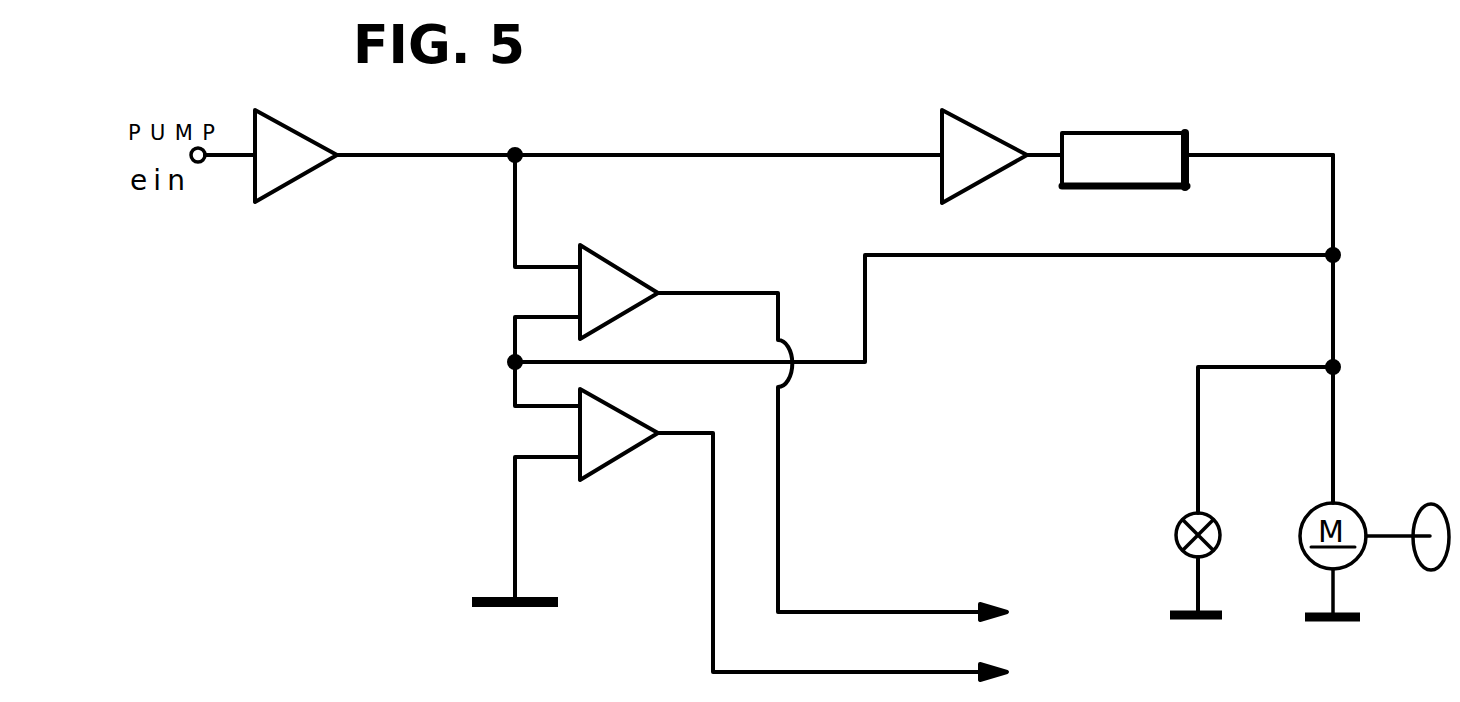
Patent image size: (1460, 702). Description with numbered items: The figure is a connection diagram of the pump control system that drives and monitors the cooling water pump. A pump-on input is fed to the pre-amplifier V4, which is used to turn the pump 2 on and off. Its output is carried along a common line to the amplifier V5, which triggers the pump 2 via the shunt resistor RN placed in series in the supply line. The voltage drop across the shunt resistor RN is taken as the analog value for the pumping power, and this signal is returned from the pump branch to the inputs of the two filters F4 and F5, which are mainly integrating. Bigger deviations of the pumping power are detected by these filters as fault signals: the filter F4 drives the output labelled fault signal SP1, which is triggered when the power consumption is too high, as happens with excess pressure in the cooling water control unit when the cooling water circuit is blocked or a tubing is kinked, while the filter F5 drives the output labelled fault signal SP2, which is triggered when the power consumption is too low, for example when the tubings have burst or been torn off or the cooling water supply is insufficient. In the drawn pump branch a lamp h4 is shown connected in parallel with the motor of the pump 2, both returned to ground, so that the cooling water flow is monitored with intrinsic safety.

The pre-amplifier V4 is at (296, 156).
The amplifier V5 is at (984, 156).
The shunt resistor RN is at (1093, 152).
The filter F4 is at (619, 292).
The filter F5 is at (619, 434).
The fault signal SP1 is at (1024, 614).
The fault signal SP2 is at (1023, 675).
The indicator lamp h4 is at (1172, 564).
The pump 2 is at (1407, 555).